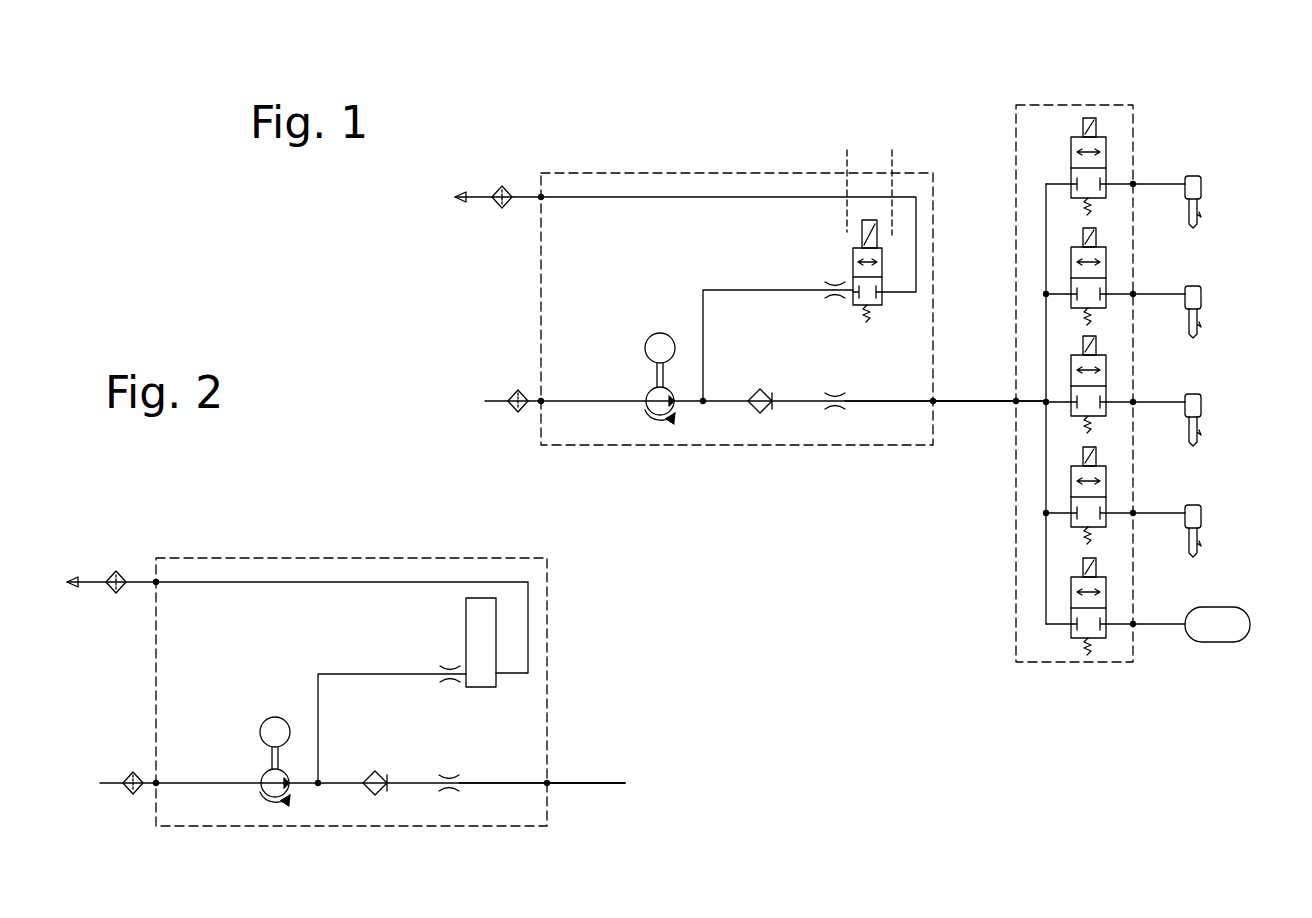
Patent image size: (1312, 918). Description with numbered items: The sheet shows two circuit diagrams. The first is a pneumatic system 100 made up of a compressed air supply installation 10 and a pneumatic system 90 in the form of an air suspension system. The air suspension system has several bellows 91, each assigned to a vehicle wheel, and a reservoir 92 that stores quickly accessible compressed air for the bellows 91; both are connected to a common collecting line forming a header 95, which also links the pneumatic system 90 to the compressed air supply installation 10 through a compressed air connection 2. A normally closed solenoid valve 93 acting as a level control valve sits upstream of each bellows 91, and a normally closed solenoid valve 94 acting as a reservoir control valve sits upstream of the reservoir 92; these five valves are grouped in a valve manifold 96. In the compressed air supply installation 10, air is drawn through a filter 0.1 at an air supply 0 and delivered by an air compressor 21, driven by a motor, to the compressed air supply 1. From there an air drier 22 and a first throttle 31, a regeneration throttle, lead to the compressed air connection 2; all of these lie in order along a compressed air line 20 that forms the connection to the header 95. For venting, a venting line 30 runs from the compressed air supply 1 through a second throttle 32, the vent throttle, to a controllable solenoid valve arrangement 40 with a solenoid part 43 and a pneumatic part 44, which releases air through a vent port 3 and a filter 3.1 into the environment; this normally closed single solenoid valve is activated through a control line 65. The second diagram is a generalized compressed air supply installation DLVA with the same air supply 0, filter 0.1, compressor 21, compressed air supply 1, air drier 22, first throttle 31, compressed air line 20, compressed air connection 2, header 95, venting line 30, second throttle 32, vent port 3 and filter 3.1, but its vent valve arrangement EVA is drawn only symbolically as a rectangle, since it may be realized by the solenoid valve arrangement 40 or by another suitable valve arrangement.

In FIG. 1, the air supply 0 is at (538, 398).
In FIG. 2, the air supply 0 is at (152, 780).
In FIG. 1, the filter 0.1 is at (506, 398).
In FIG. 2, the filter 0.1 is at (121, 782).
In FIG. 1, the compressed air supply 1 is at (624, 394).
In FIG. 2, the compressed air supply 1 is at (237, 772).
In FIG. 1, the compressed air connection 2 is at (935, 398).
In FIG. 2, the compressed air connection 2 is at (550, 782).
In FIG. 1, the vent port 3 is at (539, 195).
In FIG. 2, the vent port 3 is at (154, 580).
In FIG. 1, the filter 3.1 is at (492, 193).
In FIG. 2, the filter 3.1 is at (108, 578).
In FIG. 1, the compressed air supply installation 10 is at (587, 170).
In FIG. 1, the compressed air line 20 is at (880, 398).
In FIG. 2, the compressed air line 20 is at (490, 781).
In FIG. 1, the air compressor 21 is at (646, 412).
In FIG. 2, the air compressor 21 is at (257, 795).
In FIG. 1, the air drier 22 is at (756, 412).
In FIG. 2, the air drier 22 is at (370, 796).
In FIG. 1, the venting line 30 is at (703, 289).
In FIG. 2, the venting line 30 is at (317, 673).
In FIG. 1, the first throttle 31 is at (835, 411).
In FIG. 2, the first throttle 31 is at (449, 794).
In FIG. 1, the second throttle 32 is at (835, 300).
In FIG. 2, the second throttle 32 is at (450, 686).
In FIG. 1, the solenoid valve arrangement 40 is at (887, 265).
In FIG. 1, the solenoid part 43 is at (862, 230).
In FIG. 1, the pneumatic part 44 is at (878, 228).
In FIG. 1, the control line 65 is at (846, 152).
In FIG. 1, the pneumatic system 90 is at (1143, 350).
In FIG. 1, the bellows 91 is at (1195, 176).
In FIG. 1, the reservoir 92 is at (1215, 643).
In FIG. 1, the solenoid valve 93 is at (1107, 138).
In FIG. 1, the solenoid valve 94 is at (1107, 580).
In FIG. 1, the header 95 is at (985, 403).
In FIG. 2, the header 95 is at (600, 790).
In FIG. 1, the valve manifold 96 is at (1134, 105).
In FIG. 1, the pneumatic system 100 is at (942, 524).
In FIG. 2, the compressed air supply installation DLVA is at (266, 528).
In FIG. 2, the vent valve arrangement EVA is at (508, 688).